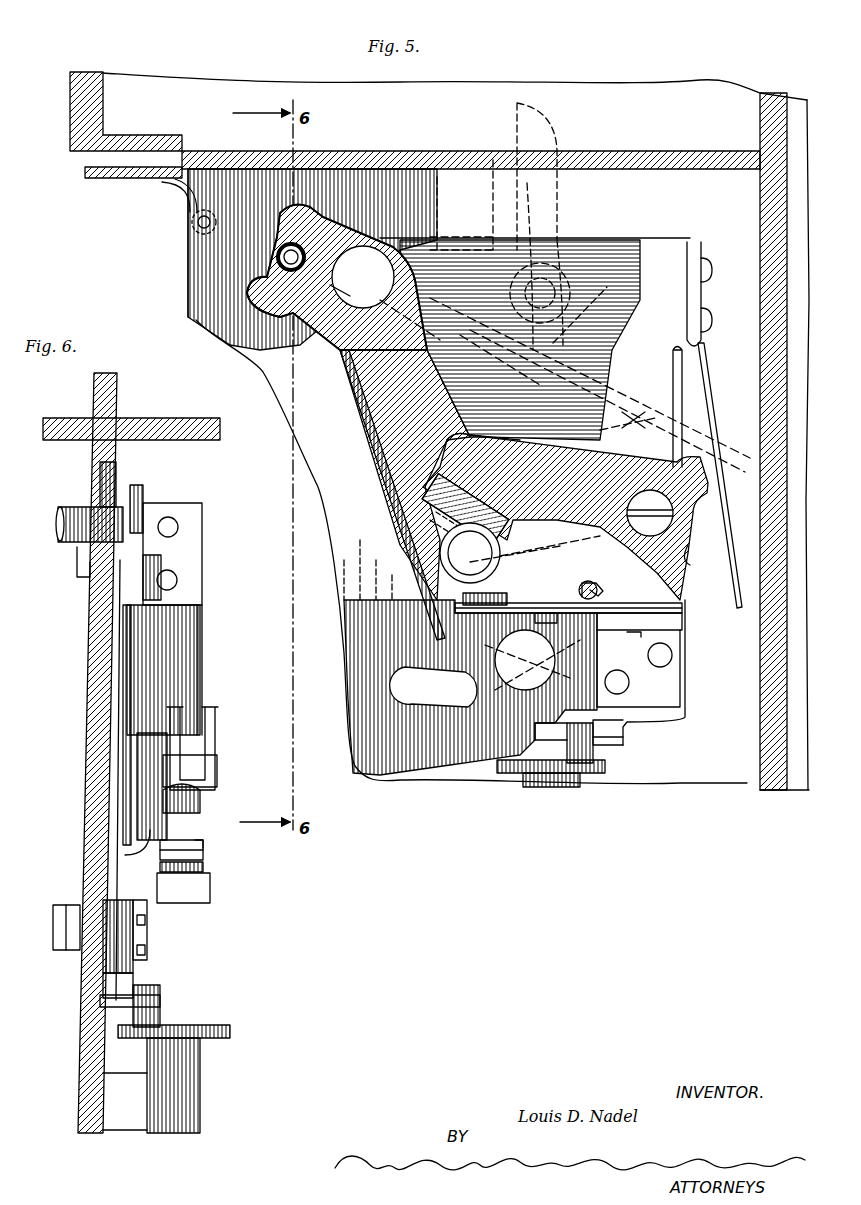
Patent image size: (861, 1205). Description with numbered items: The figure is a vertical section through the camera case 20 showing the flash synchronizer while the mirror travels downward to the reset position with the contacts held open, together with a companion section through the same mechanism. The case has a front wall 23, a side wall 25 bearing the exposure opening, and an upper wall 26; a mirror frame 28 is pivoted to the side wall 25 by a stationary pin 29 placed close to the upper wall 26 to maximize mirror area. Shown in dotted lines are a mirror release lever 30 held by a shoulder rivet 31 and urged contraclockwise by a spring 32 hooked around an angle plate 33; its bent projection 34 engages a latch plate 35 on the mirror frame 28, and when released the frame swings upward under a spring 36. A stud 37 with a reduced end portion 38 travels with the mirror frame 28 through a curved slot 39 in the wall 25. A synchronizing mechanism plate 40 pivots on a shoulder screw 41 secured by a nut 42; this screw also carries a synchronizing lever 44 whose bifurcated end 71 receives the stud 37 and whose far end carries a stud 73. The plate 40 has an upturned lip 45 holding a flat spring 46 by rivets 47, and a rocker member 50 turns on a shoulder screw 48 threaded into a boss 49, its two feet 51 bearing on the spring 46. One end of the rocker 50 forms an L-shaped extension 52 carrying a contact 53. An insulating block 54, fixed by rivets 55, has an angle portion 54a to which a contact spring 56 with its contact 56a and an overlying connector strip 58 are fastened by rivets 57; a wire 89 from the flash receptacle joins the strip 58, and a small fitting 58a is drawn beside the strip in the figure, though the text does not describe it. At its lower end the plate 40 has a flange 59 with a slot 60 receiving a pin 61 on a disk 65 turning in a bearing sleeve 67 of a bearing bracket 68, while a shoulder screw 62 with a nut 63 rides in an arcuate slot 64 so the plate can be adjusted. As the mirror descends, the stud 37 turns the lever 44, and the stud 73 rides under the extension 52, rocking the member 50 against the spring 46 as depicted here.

In FIG. 5, the camera case 20 is at (710, 93).
In FIG. 5, the front wall 23 is at (763, 748).
In FIG. 5, the end or side wall 25 is at (345, 606).
In FIG. 6, the end or side wall 25 is at (92, 754).
In FIG. 5, the upper wall 26 is at (694, 166).
In FIG. 6, the upper wall 26 is at (147, 428).
In FIG. 5, the mirror frame 28 is at (635, 412).
In FIG. 5, the pin 29 is at (197, 223).
In FIG. 5, the mirror release lever 30 is at (602, 322).
In FIG. 5, the shoulder rivet 31 is at (556, 287).
In FIG. 5, the spring 32 is at (570, 293).
In FIG. 5, the angle plate 33 is at (466, 185).
In FIG. 5, the projection 34 is at (540, 556).
In FIG. 5, the latch plate 35 is at (638, 418).
In FIG. 5, the spring 36 is at (184, 203).
In FIG. 6, the stud 37 is at (82, 512).
In FIG. 5, the reduced end portion 38 is at (304, 259).
In FIG. 6, the reduced end portion 38 is at (144, 510).
In FIG. 5, the curved slot 39 is at (252, 292).
In FIG. 6, the curved slot 39 is at (100, 497).
In FIG. 5, the synchronizing mechanism plate 40 is at (657, 250).
In FIG. 5, the shoulder screw 41 is at (374, 258).
In FIG. 6, the shoulder screw 41 is at (161, 577).
In FIG. 6, the nut 42 is at (78, 580).
In FIG. 5, the synchronizing lever 44 is at (366, 381).
In FIG. 6, the synchronizing lever 44 is at (135, 667).
In FIG. 5, the upturned lip 45 is at (688, 298).
In FIG. 6, the upturned lip 45 is at (186, 548).
In FIG. 5, the flat or plate spring 46 is at (712, 413).
In FIG. 6, the flat or plate spring 46 is at (186, 686).
In FIG. 5, the rivets 47 is at (706, 318).
In FIG. 6, the rivets 47 is at (177, 582).
In FIG. 5, the shoulder screw 48 is at (666, 522).
In FIG. 5, the boss 49 is at (688, 553).
In FIG. 6, the boss 49 is at (152, 740).
In FIG. 5, the rocker member or lever 50 is at (443, 468).
In FIG. 6, the rocker member or lever 50 is at (218, 718).
In FIG. 5, the feet or projections 51 is at (684, 590).
In FIG. 5, the L-shaped extension 52 is at (400, 503).
In FIG. 6, the L-shaped extension 52 is at (200, 768).
In FIG. 5, the contact or terminal 53 is at (422, 530).
In FIG. 6, the contact or terminal 53 is at (203, 800).
In FIG. 5, the insulating block 54 is at (668, 678).
In FIG. 6, the insulating block 54 is at (103, 1000).
In FIG. 5, the L-shaped or angle portion 54a is at (672, 623).
In FIG. 6, the L-shaped or angle portion 54a is at (205, 893).
In FIG. 5, the rivets 55 is at (630, 683).
In FIG. 6, the rivets 55 is at (145, 955).
In FIG. 5, the contact spring 56 is at (562, 615).
In FIG. 6, the contact spring 56 is at (150, 905).
In FIG. 5, the contact or terminal 56a is at (462, 597).
In FIG. 6, the contact or terminal 56a is at (205, 865).
In FIG. 5, the rivets 57 is at (634, 634).
In FIG. 5, the connector strip 58 is at (640, 607).
In FIG. 5, the clip 58a is at (593, 583).
In FIG. 6, the clip 58a is at (200, 848).
In FIG. 5, the out-turned end or flange 59 is at (616, 745).
In FIG. 6, the out-turned end or flange 59 is at (165, 1000).
In FIG. 5, the slot 60 is at (597, 733).
In FIG. 5, the pin 61 is at (570, 750).
In FIG. 6, the pin 61 is at (160, 1012).
In FIG. 5, the shoulder screw 62 is at (512, 685).
In FIG. 6, the shoulder screw 62 is at (133, 952).
In FIG. 6, the nut 63 is at (72, 952).
In FIG. 5, the arcuate slot 64 is at (405, 686).
In FIG. 5, the disk 65 is at (606, 767).
In FIG. 6, the disk 65 is at (232, 1033).
In FIG. 5, the bearing sleeve 67 is at (568, 782).
In FIG. 6, the bearing sleeve 67 is at (200, 1073).
In FIG. 6, the bearing bracket 68 is at (137, 1130).
In FIG. 5, the bifurcated end 71 is at (345, 290).
In FIG. 5, the stud 73 is at (442, 560).
In FIG. 6, the stud 73 is at (125, 855).
In FIG. 5, the wire 89 is at (579, 591).
In FIG. 6, the wire 89 is at (205, 850).